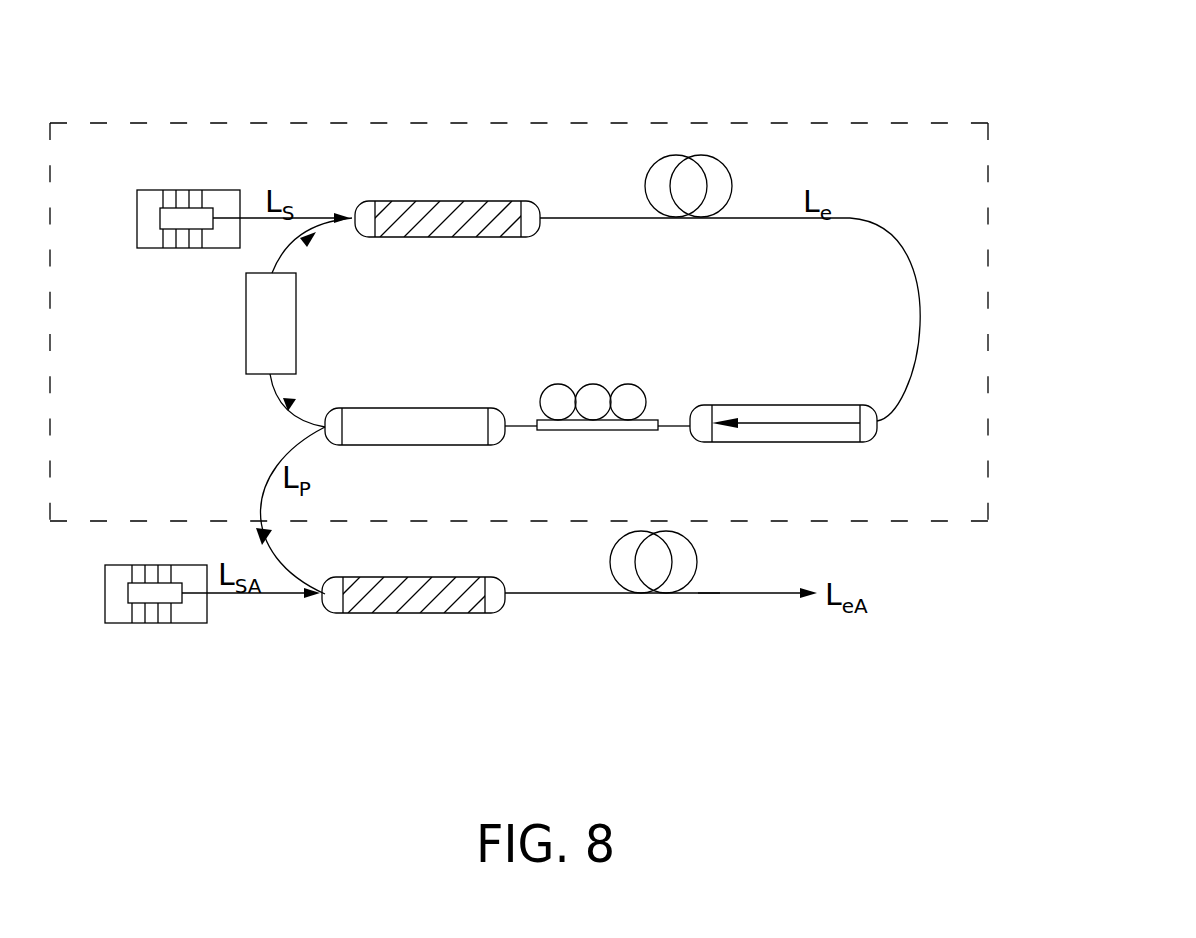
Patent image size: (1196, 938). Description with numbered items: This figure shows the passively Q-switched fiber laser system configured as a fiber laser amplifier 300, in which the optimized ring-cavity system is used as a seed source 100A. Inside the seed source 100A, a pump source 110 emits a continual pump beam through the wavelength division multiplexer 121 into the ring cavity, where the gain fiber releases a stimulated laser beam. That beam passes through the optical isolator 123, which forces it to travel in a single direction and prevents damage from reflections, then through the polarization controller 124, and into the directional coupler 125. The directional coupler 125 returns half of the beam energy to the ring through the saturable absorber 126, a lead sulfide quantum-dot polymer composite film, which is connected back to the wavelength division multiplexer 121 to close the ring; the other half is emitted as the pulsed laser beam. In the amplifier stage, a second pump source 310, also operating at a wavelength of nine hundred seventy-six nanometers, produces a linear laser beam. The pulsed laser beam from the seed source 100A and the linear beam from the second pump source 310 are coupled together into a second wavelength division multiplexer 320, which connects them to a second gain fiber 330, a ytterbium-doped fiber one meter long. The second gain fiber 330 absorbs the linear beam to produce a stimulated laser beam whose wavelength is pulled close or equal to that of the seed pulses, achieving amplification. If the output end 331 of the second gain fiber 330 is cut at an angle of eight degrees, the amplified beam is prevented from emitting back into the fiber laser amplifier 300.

The fiber laser amplifier 300 is at (1026, 100).
The seed source 100A is at (988, 322).
The pump source 110 is at (196, 190).
The wavelength division multiplexer 121 is at (455, 201).
The optical isolator 123 is at (786, 405).
The polarization controller 124 is at (597, 383).
The directional coupler 125 is at (416, 408).
The saturable absorber 126 is at (254, 328).
The second pump source 310 is at (157, 623).
The second wavelength division multiplexer 320 is at (415, 613).
The second gain fiber 330 is at (698, 562).
The output end 331 is at (708, 593).